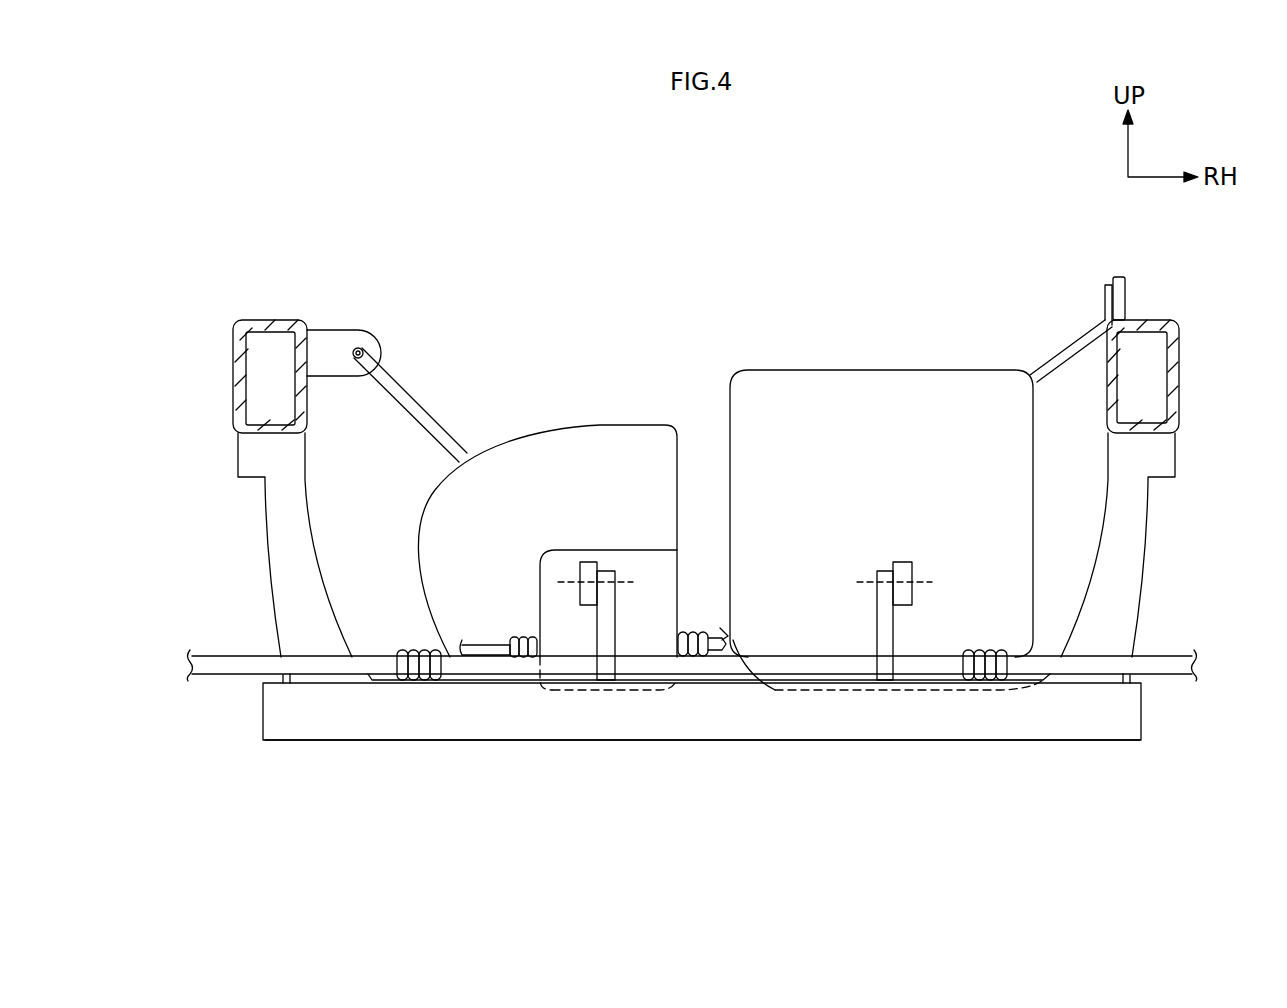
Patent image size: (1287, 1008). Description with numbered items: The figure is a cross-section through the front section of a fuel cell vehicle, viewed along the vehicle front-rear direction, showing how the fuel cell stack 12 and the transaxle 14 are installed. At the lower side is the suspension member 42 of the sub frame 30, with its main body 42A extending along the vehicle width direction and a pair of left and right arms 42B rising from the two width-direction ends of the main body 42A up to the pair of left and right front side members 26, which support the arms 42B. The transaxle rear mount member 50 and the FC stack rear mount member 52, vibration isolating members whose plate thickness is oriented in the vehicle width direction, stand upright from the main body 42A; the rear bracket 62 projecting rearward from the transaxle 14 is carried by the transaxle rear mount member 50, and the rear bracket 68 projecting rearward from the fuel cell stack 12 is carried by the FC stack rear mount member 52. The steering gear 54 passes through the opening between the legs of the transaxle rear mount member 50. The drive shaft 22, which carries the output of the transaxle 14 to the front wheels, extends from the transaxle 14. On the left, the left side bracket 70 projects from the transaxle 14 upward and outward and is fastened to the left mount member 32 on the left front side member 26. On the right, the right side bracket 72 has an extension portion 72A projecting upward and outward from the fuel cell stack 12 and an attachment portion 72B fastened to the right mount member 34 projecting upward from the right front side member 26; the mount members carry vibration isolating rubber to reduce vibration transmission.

The fuel cell stack 12 is at (862, 370).
The transaxle 14 is at (600, 425).
The drive shaft 22 is at (500, 640).
The front side members 26 is at (236, 360).
The sub frame 30 is at (382, 743).
The left mount member 32 is at (341, 330).
The right mount member 34 is at (1127, 287).
The suspension member 42 is at (702, 767).
The main body 42A is at (472, 745).
The arms 42B is at (267, 548).
The transaxle rear mount member 50 is at (615, 633).
The FC stack rear mount member 52 is at (877, 620).
The steering gear 54 is at (1090, 686).
The rear bracket 62 is at (577, 597).
The rear bracket 68 is at (912, 598).
The left side bracket 70 is at (394, 400).
The right side bracket 72 is at (1028, 288).
The extension portion 72A is at (1053, 326).
The attachment portion 72B is at (1105, 293).